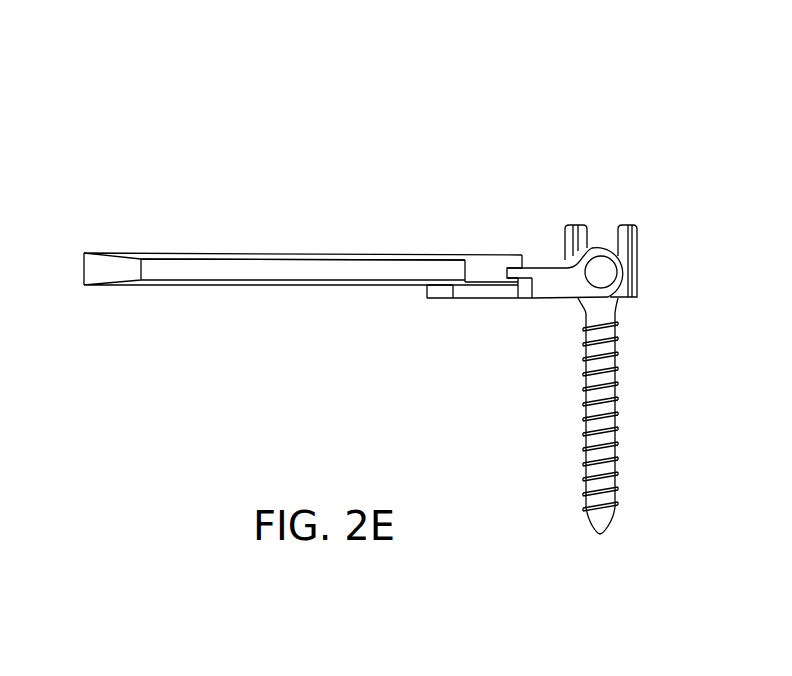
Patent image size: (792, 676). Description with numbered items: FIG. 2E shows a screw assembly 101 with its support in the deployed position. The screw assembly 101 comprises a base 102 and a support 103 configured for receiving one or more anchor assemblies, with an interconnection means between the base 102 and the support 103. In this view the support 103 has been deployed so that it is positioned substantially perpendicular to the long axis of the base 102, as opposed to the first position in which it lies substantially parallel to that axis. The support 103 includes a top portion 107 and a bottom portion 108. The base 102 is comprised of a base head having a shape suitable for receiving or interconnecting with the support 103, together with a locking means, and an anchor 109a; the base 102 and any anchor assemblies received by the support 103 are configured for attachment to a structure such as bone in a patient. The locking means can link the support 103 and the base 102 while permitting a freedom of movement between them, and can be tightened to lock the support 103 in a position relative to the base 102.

The screw assembly 101 is at (612, 181).
The base 102 is at (598, 416).
The support 103 is at (235, 286).
The top portion 107 is at (262, 253).
The bottom portion 108 is at (287, 286).
The anchor 109a is at (585, 458).